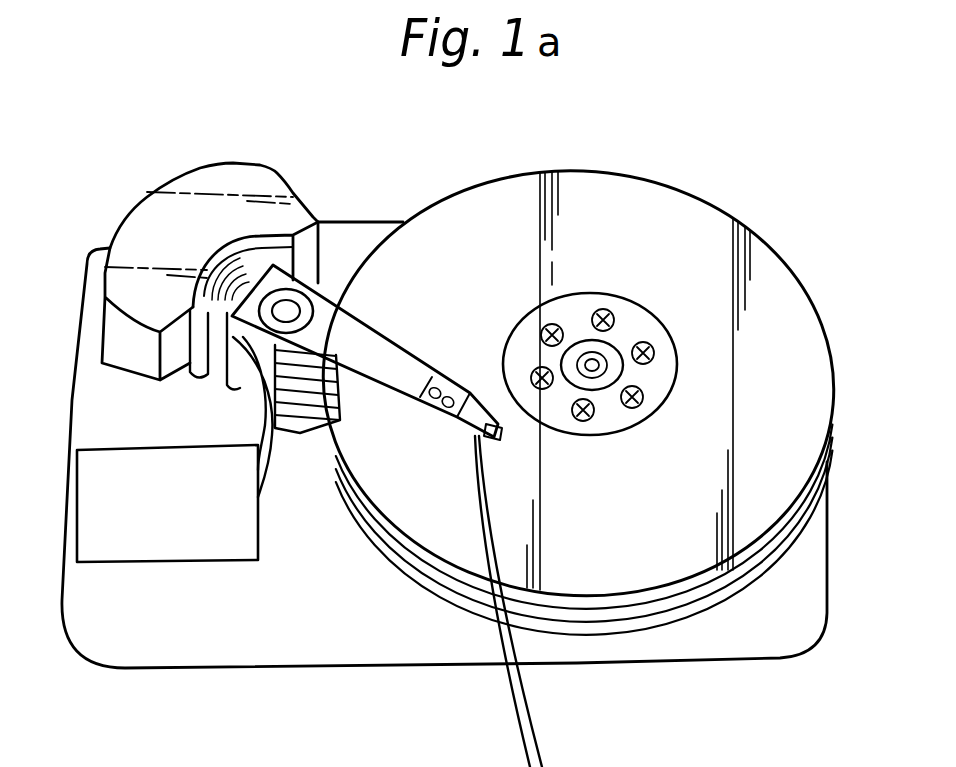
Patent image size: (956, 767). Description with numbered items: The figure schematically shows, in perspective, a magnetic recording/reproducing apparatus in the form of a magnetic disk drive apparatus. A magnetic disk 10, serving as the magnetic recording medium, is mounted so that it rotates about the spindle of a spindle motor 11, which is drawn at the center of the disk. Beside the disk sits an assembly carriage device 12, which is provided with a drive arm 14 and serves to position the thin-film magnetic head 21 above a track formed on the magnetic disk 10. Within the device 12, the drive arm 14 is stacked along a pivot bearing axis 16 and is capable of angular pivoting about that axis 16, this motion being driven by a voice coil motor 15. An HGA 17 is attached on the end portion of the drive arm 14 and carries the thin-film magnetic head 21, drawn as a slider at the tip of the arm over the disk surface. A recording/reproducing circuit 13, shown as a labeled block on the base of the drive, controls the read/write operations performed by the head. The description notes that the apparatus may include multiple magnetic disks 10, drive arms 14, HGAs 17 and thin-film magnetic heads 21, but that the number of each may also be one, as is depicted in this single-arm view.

The magnetic disk 10 is at (733, 212).
The spindle motor 11 is at (598, 362).
The assembly carriage device 12 is at (235, 183).
The recording/reproducing circuit 13 is at (160, 562).
The drive arm 14 is at (347, 340).
The voice coil motor 15 is at (203, 352).
The pivot bearing axis 16 is at (317, 297).
The HGA 17 is at (487, 412).
The thin-film magnetic head 21 is at (490, 440).